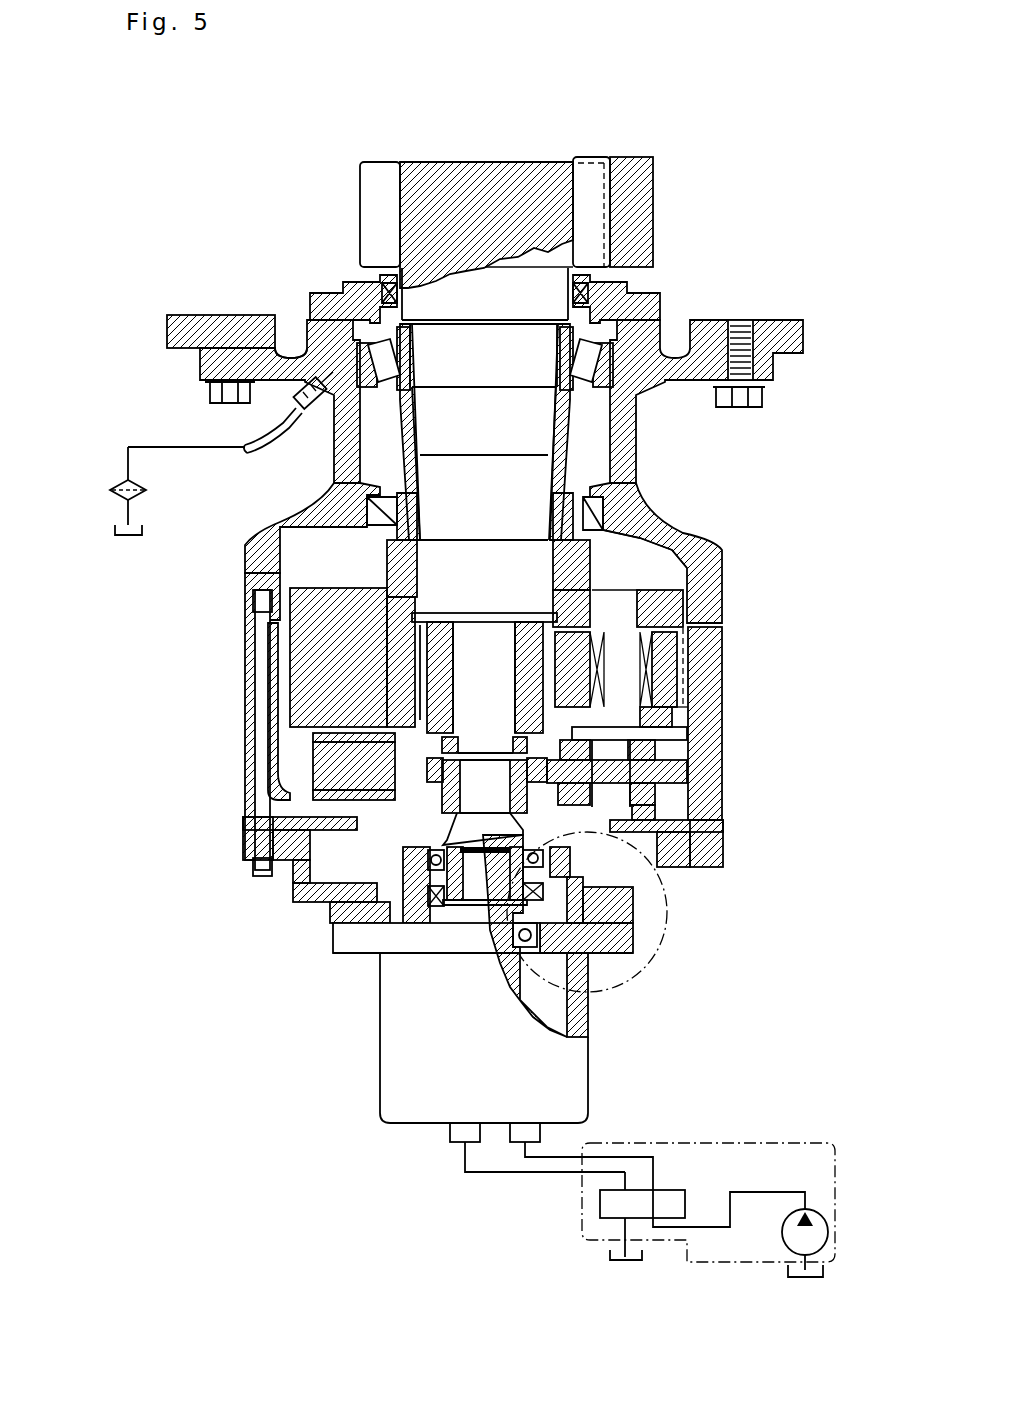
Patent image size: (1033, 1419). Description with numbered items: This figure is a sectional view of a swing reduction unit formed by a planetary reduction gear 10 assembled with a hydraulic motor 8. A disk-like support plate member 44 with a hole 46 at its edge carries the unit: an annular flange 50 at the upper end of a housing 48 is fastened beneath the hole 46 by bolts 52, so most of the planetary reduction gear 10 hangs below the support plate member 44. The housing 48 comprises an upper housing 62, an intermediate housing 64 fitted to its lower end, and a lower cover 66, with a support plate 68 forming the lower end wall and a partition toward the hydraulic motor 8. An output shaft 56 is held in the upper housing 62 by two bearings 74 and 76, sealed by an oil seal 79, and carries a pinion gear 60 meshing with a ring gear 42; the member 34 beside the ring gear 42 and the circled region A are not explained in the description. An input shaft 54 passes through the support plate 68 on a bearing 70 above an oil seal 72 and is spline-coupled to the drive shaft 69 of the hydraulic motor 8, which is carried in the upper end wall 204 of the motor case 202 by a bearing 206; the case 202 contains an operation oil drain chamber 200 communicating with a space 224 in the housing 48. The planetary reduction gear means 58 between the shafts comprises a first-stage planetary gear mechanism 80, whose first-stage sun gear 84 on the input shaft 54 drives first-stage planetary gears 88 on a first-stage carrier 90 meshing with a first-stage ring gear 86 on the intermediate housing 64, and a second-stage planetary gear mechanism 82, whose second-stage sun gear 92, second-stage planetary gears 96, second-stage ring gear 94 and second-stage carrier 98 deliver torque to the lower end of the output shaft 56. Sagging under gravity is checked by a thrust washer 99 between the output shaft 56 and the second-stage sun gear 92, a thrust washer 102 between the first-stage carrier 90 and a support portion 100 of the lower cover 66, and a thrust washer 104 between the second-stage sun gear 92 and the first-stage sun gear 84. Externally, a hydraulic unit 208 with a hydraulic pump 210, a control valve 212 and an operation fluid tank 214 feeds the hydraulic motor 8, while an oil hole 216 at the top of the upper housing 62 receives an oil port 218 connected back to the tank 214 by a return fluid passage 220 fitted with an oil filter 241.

The hydraulic motor 8 is at (398, 1078).
The planetary reduction gear 10 is at (745, 547).
The frame member 34 is at (643, 173).
The ring gear 42 is at (590, 165).
The support plate member 44 is at (185, 313).
The hole 46 is at (347, 340).
The housing 48 is at (640, 492).
The annular flange 50 is at (200, 365).
The bolts 52 is at (738, 318).
The input shaft 54 is at (460, 830).
The output shaft 56 is at (498, 432).
The planetary reduction gear means 58 is at (655, 560).
The pinion gear 60 is at (380, 173).
The upper housing 62 is at (613, 455).
The intermediate housing 64 is at (707, 690).
The lower cover 66 is at (710, 847).
The support plate 68 is at (627, 913).
The drive shaft 69 is at (473, 885).
The bearing 70 is at (430, 867).
The oil seal 72 is at (450, 885).
The bearing 74 is at (580, 380).
The bearing 76 is at (580, 525).
The oil seal 79 is at (600, 283).
The first-stage planetary gear mechanism 80 is at (315, 778).
The second-stage planetary gear mechanism 82 is at (298, 647).
The first-stage sun gear 84 is at (317, 790).
The first-stage ring gear 86 is at (690, 778).
The first-stage planetary gears 88 is at (670, 733).
The first-stage carrier 90 is at (315, 757).
The second-stage sun gear 92 is at (370, 660).
The second-stage ring gear 94 is at (692, 667).
The second-stage planetary gears 96 is at (680, 647).
The second-stage carrier 98 is at (330, 610).
The thrust washer 99 is at (467, 612).
The support portion 100 is at (612, 865).
The thrust washer 102 is at (247, 805).
The thrust washer 104 is at (310, 740).
The operation oil drain chamber 200 is at (557, 1013).
The case 202 is at (587, 1000).
The upper end wall 204 is at (617, 940).
The bearing 206 is at (528, 947).
The hydraulic unit 208 is at (738, 1141).
The hydraulic pump 210 is at (817, 1210).
The control valve 212 is at (670, 1187).
The operation fluid tank 214 is at (637, 1283).
The oil hole 216 is at (285, 327).
The oil port 218 is at (287, 400).
The return fluid passage 220 is at (162, 450).
The space 224 is at (640, 863).
The oil filter 241 is at (120, 482).
The detail region A is at (640, 965).